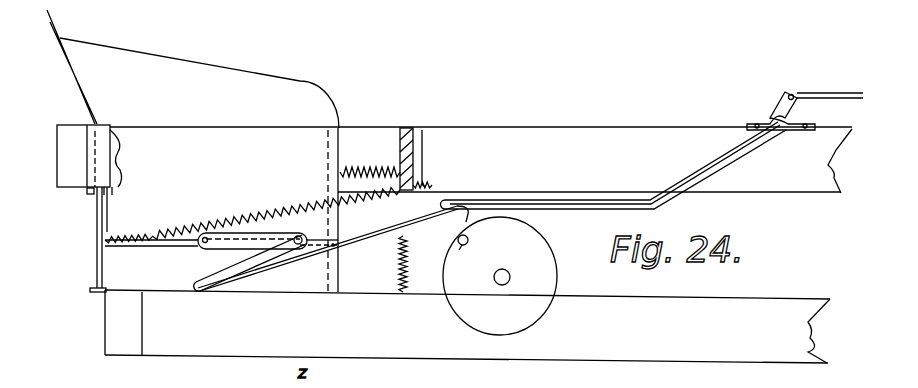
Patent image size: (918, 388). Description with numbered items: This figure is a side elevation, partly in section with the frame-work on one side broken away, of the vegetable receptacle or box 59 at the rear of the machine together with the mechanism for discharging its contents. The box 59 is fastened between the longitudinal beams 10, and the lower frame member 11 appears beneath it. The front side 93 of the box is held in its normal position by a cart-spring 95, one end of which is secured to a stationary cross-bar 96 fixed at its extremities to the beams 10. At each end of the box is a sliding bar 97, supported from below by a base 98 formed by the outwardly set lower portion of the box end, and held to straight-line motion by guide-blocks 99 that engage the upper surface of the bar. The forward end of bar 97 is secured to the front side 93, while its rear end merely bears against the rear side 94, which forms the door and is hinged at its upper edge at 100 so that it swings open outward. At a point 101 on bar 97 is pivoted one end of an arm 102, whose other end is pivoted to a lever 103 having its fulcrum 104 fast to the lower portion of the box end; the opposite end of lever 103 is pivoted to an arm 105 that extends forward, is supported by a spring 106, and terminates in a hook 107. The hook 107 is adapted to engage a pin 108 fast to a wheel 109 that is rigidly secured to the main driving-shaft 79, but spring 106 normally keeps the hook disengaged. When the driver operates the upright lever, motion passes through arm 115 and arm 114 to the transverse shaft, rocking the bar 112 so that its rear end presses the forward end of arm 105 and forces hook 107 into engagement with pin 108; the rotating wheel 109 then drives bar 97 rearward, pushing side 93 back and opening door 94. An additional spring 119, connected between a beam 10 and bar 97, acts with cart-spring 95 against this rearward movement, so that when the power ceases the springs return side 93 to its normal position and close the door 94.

The longitudinal beams 10 is at (449, 151).
The lower frame body 11 is at (467, 326).
The receptacle or box 59 is at (238, 163).
The main driving-shaft 79 is at (506, 278).
The front side of box 93 is at (338, 246).
The rear side of box 94 is at (100, 268).
The cart-spring 95 is at (368, 172).
The stationary cross-bar 96 is at (412, 130).
The sliding bar 97 is at (177, 244).
The base 98 is at (128, 250).
The guide-blocks 99 is at (110, 230).
The hinge 100 is at (88, 194).
The pivot point 101 is at (205, 243).
The arm 102 is at (266, 238).
The lever 103 is at (268, 252).
The fulcrum 104 is at (243, 268).
The arm 105 is at (318, 252).
The spring 106 is at (400, 256).
The hook 107 is at (466, 225).
The pin 108 is at (465, 250).
The wheel 109 is at (500, 276).
The bar 112 is at (606, 200).
The arm 114 is at (778, 104).
The arm 115 is at (830, 85).
The spring 119 is at (302, 186).